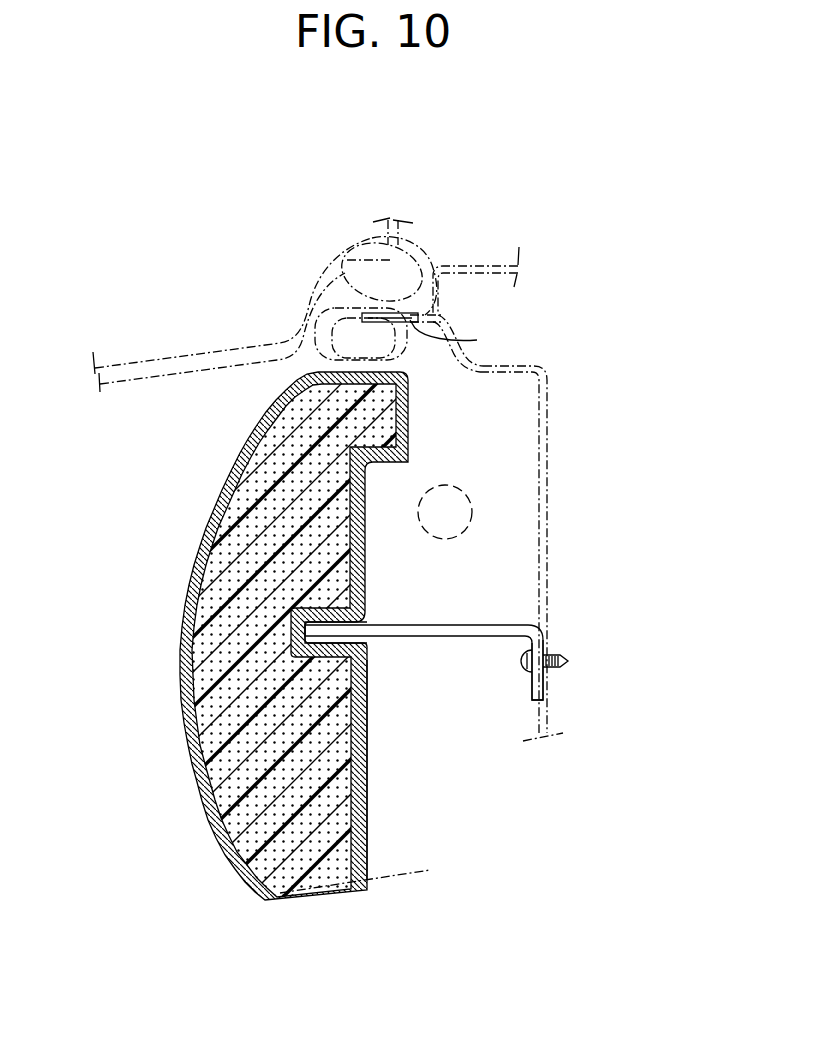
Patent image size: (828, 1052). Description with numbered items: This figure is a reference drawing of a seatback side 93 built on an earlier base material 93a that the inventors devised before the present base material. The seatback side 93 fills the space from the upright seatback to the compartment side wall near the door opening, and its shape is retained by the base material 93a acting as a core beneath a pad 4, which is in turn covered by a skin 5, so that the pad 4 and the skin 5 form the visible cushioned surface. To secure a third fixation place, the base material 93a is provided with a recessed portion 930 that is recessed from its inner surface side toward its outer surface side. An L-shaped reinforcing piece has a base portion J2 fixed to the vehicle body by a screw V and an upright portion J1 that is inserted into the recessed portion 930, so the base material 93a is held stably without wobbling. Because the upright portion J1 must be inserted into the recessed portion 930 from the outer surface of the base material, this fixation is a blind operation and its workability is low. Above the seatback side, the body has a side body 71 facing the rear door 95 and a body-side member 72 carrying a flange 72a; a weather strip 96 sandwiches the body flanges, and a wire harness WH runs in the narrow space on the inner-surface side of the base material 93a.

The pad 4 is at (217, 625).
The skin 5 is at (200, 547).
The seatback side 93 is at (202, 827).
The recessed portion 930 is at (330, 634).
The base material 93a is at (368, 730).
The rear door 95 is at (178, 360).
The weather strip 96 is at (413, 262).
The side body 71 is at (488, 262).
The pillar outer panel 72 is at (550, 498).
The flange 72a is at (477, 340).
The wire harness WH is at (473, 500).
The upright portion J1 is at (453, 625).
The base portion J2 is at (530, 690).
The screw V is at (520, 667).